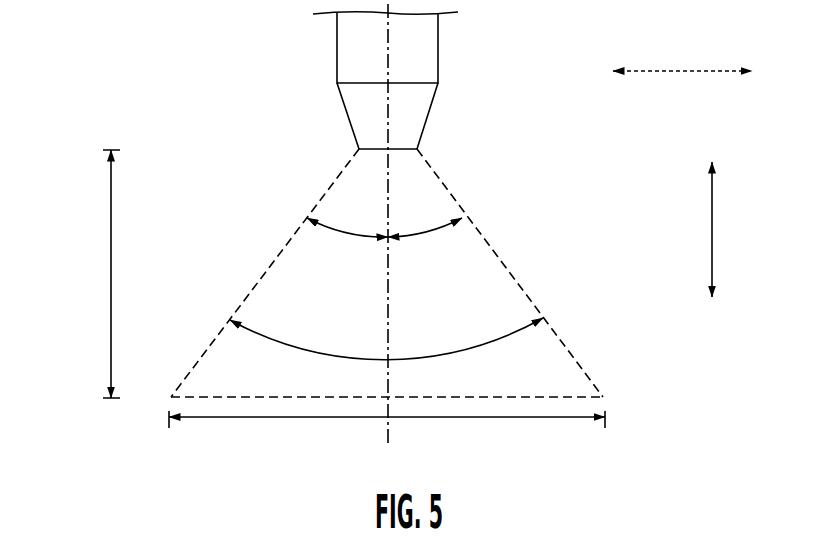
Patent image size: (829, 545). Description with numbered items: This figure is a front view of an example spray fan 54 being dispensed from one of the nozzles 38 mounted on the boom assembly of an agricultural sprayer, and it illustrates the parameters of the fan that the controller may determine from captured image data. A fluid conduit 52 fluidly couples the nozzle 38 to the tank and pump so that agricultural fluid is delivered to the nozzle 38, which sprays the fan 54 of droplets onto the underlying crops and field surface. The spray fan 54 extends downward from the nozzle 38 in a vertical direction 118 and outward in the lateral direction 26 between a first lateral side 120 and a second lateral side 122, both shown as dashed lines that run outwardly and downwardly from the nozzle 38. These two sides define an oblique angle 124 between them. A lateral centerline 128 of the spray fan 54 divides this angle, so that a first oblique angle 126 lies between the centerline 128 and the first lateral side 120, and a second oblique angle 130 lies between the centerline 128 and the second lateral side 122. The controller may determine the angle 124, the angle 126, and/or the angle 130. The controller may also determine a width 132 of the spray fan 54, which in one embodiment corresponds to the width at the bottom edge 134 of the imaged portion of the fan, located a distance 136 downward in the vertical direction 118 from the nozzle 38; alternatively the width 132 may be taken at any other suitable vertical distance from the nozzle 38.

The lateral direction 26 is at (686, 70).
The nozzle 38 is at (433, 115).
The fluid conduit 52 is at (438, 40).
The spray fan 54 is at (237, 158).
The vertical direction 118 is at (713, 218).
The first lateral side 120 is at (252, 287).
The second lateral side 122 is at (515, 277).
The oblique angle 124 is at (282, 345).
The first oblique angle 126 is at (335, 230).
The lateral centerline 128 is at (387, 44).
The second oblique angle 130 is at (423, 235).
The width 132 is at (513, 417).
The bottom edge 134 is at (289, 398).
The distance 136 is at (111, 286).